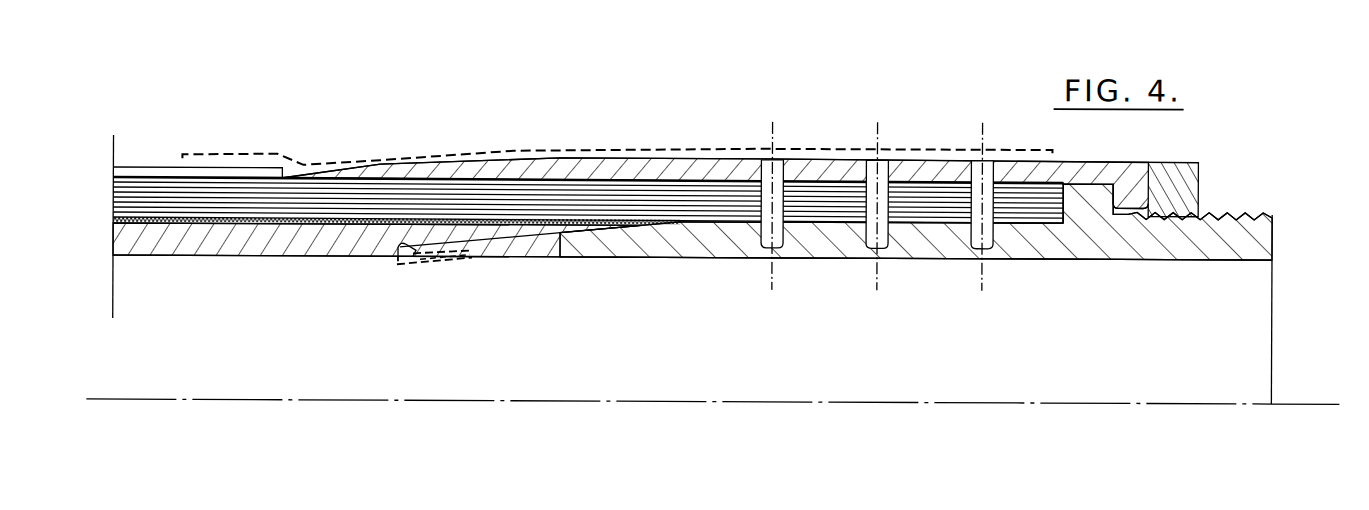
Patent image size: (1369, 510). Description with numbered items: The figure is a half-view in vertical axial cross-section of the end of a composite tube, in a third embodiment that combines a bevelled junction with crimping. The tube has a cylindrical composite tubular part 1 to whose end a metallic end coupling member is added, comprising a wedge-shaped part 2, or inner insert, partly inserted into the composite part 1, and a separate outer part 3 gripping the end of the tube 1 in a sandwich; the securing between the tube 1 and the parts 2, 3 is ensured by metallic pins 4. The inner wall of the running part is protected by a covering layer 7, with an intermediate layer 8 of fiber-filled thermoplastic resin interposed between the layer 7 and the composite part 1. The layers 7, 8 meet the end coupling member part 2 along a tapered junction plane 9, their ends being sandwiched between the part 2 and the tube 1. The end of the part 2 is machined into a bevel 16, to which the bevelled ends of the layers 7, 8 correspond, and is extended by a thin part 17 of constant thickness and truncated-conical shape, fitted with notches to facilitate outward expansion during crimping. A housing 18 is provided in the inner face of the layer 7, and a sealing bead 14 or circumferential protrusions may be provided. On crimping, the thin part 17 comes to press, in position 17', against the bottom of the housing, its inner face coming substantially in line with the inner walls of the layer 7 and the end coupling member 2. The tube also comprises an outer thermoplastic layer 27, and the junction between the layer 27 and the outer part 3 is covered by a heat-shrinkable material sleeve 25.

The composite tubular part 1 is at (528, 195).
The wedge-shaped part 2 is at (932, 242).
The outer part 3 is at (598, 169).
The metallic pins 4 is at (978, 169).
The covering layer 7 is at (335, 246).
The intermediate layer 8 is at (248, 221).
The tapered junction plane 9 is at (565, 241).
The sealing bead 14 is at (400, 244).
The bevel 16 is at (707, 241).
The thin part 17 is at (446, 310).
The crimped thin part 17' is at (460, 148).
The housing 18 is at (432, 246).
The heat-shrinkable material sleeve 25 is at (715, 147).
The outer layer 27 is at (212, 172).